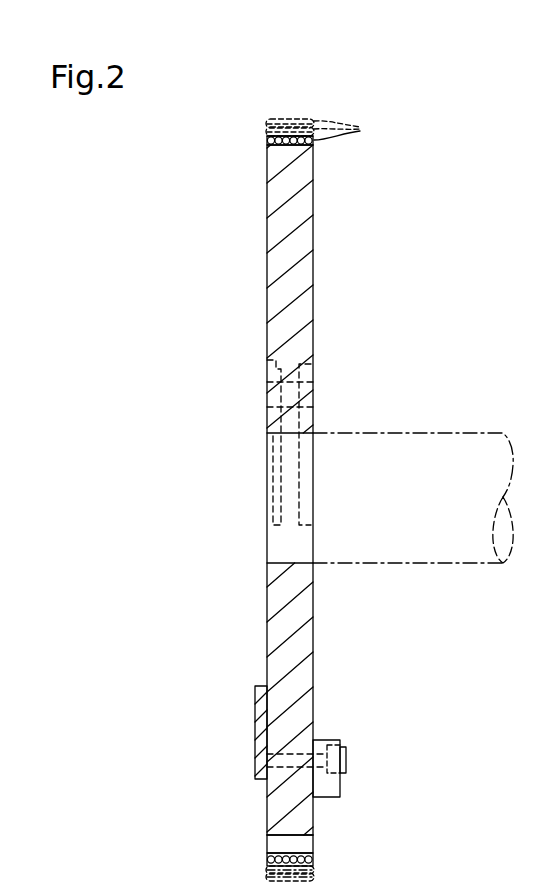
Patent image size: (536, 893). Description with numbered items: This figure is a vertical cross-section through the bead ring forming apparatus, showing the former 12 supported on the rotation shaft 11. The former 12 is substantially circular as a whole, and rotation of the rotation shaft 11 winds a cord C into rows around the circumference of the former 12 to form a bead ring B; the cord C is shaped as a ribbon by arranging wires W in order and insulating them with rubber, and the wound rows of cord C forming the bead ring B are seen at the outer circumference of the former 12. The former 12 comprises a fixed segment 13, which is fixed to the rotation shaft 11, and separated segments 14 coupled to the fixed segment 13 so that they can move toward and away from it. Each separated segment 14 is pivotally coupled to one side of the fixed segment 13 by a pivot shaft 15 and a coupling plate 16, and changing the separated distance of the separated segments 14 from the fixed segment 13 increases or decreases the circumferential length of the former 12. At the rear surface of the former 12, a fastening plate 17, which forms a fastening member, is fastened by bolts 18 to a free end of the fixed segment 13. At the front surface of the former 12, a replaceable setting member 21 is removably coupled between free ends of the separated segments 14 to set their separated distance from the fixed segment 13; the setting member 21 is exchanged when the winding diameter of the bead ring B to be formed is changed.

The rotation shaft 11 is at (432, 433).
The former 12 is at (313, 198).
The fixed segment 13 is at (313, 602).
The separated segment 14 is at (313, 845).
The pivot shaft 15 is at (305, 373).
The coupling plate 16 is at (267, 350).
The fastening plate 17 is at (316, 740).
The bolt 18 is at (346, 762).
The setting member 21 is at (256, 722).
The wire W is at (277, 128).
The bead ring B is at (298, 125).
The cord C is at (346, 129).